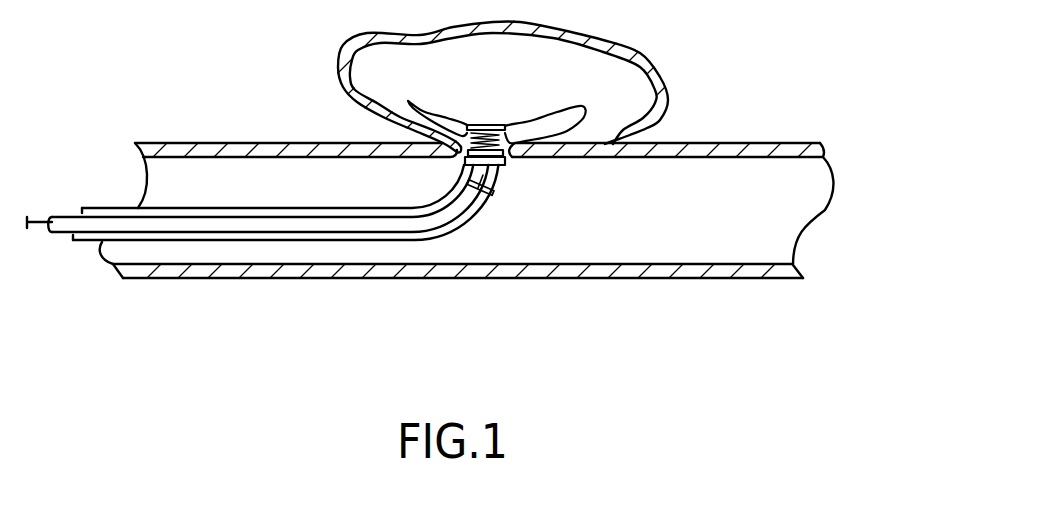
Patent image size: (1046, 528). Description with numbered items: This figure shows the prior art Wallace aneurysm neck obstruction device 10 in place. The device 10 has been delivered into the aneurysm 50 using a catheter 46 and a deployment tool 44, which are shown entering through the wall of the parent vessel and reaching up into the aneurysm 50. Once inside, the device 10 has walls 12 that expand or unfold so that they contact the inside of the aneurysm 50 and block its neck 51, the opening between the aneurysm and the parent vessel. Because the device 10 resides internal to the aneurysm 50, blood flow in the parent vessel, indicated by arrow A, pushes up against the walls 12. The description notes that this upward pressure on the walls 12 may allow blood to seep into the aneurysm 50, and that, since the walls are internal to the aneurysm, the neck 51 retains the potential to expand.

The Wallace device 10 is at (515, 166).
The walls 12 is at (537, 119).
The deployment tool 44 is at (464, 224).
The catheter 46 is at (497, 193).
The aneurysm 50 is at (666, 75).
The neck 51 is at (427, 143).
The arrow A is at (460, 162).